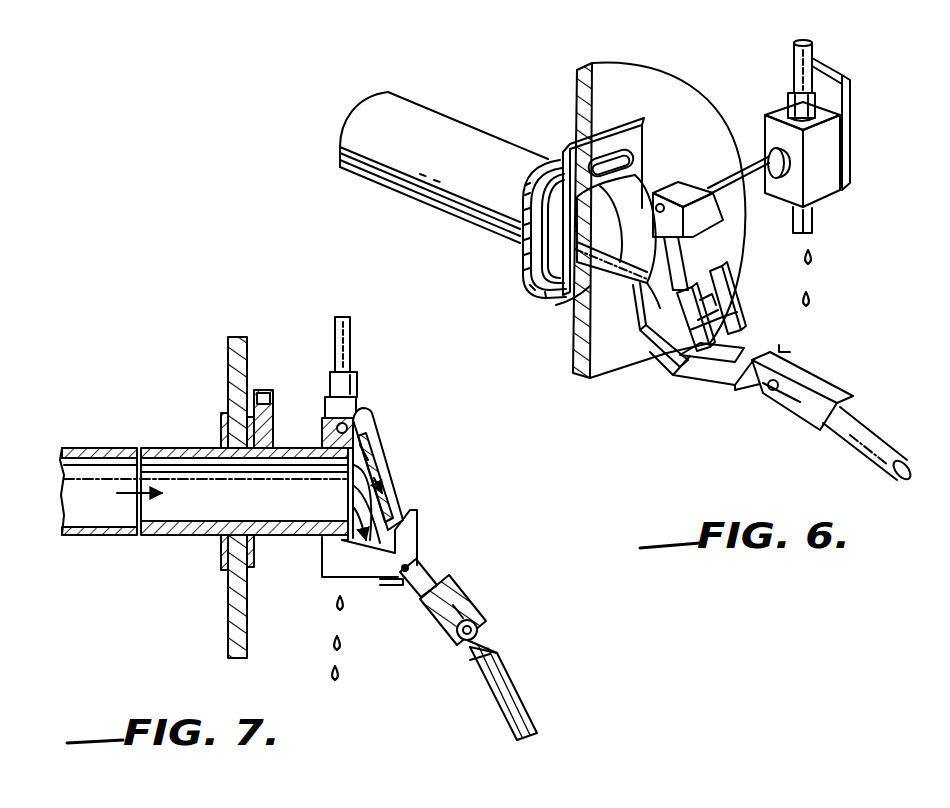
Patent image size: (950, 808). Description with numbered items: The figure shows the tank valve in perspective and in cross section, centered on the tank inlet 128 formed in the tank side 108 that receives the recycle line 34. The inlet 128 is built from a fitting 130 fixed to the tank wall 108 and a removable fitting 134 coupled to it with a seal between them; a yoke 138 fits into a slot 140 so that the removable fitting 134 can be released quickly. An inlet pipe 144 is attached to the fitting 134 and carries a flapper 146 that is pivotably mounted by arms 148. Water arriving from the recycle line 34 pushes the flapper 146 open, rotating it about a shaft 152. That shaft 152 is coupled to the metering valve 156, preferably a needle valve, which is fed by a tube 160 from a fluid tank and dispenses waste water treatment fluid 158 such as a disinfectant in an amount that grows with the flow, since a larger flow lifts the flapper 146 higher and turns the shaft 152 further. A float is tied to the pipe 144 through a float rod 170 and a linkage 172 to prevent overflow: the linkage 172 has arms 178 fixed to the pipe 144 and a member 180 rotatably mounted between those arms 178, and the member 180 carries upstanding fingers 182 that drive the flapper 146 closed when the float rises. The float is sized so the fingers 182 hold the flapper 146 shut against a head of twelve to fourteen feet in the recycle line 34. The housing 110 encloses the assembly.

In FIG. 6, the recycle line 34 is at (427, 110).
In FIG. 7, the recycle line 34 is at (100, 447).
In FIG. 6, the tank side 108 is at (650, 68).
In FIG. 7, the tank side 108 is at (237, 497).
In FIG. 6, the housing 110 is at (331, 0).
In FIG. 6, the tank inlet 128 is at (768, 316).
In FIG. 7, the tank inlet 128 is at (443, 530).
In FIG. 6, the fitting 130 is at (522, 258).
In FIG. 7, the fitting 130 is at (222, 553).
In FIG. 6, the removable fitting 134 is at (546, 280).
In FIG. 7, the removable fitting 134 is at (257, 567).
In FIG. 6, the yoke 138 is at (627, 130).
In FIG. 7, the yoke 138 is at (268, 390).
In FIG. 6, the slot 140 is at (595, 216).
In FIG. 6, the inlet pipe 144 is at (573, 298).
In FIG. 7, the inlet pipe 144 is at (287, 537).
In FIG. 6, the flapper 146 is at (700, 268).
In FIG. 7, the flapper 146 is at (390, 506).
In FIG. 6, the arms 148 is at (700, 250).
In FIG. 7, the arms 148 is at (386, 470).
In FIG. 6, the shaft 152 is at (722, 173).
In FIG. 7, the shaft 152 is at (362, 430).
In FIG. 6, the metering valve 156 is at (837, 164).
In FIG. 7, the metering valve 156 is at (362, 402).
In FIG. 6, the liquid droplets 158 is at (810, 264).
In FIG. 7, the liquid droplets 158 is at (333, 667).
In FIG. 6, the tube 160 is at (812, 53).
In FIG. 7, the tube 160 is at (350, 342).
In FIG. 6, the float rod 170 is at (872, 457).
In FIG. 7, the float rod 170 is at (532, 720).
In FIG. 6, the linkage 172 is at (765, 398).
In FIG. 7, the linkage 172 is at (490, 615).
In FIG. 6, the arms 178 is at (667, 360).
In FIG. 6, the member 180 is at (780, 345).
In FIG. 7, the member 180 is at (455, 606).
In FIG. 6, the upstanding fingers 182 is at (693, 327).